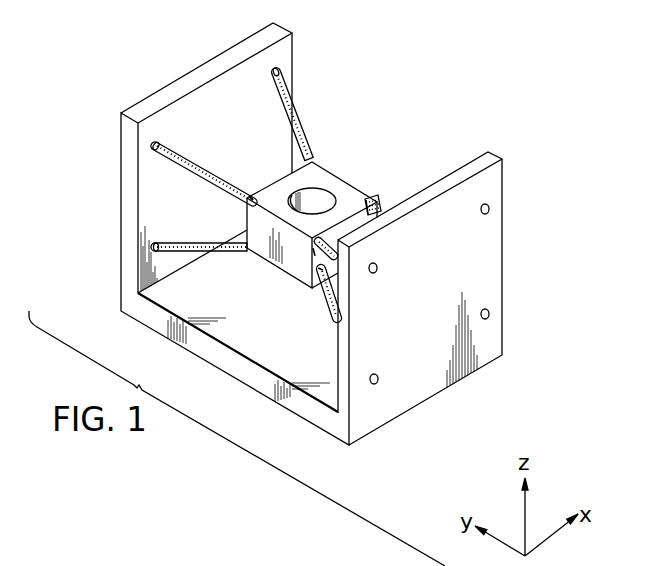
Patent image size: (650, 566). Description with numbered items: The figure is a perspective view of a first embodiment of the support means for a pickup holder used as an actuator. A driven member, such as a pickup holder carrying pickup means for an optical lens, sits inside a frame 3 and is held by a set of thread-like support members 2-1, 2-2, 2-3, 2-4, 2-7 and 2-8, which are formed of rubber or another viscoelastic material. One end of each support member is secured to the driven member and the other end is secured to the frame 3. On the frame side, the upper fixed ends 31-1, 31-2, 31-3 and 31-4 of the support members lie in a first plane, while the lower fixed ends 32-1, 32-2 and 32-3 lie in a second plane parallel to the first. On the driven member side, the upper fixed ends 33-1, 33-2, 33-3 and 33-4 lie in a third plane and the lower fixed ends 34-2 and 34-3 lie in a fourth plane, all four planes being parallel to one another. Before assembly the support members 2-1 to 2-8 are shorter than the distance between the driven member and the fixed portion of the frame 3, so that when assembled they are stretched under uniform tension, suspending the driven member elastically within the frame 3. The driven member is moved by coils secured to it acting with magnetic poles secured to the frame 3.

The support member 2-1 is at (296, 118).
The support member 2-2 is at (383, 203).
The support member 2-3 is at (322, 254).
The support member 2-4 is at (200, 167).
The support member 2-7 is at (336, 318).
The support member 2-8 is at (192, 242).
The frame 3 is at (487, 153).
The upper fixed end 31-1 is at (489, 209).
The upper fixed end 31-2 is at (377, 268).
The upper fixed end 31-3 is at (153, 142).
The upper fixed end 31-4 is at (272, 73).
The lower fixed end 32-1 is at (489, 314).
The lower fixed end 32-2 is at (376, 374).
The lower fixed end 32-3 is at (153, 250).
The upper fixed end 33-1 is at (369, 198).
The upper fixed end 33-2 is at (316, 248).
The upper fixed end 33-3 is at (255, 193).
The upper fixed end 33-4 is at (380, 120).
The lower fixed end 34-2 is at (318, 268).
The lower fixed end 34-3 is at (175, 304).